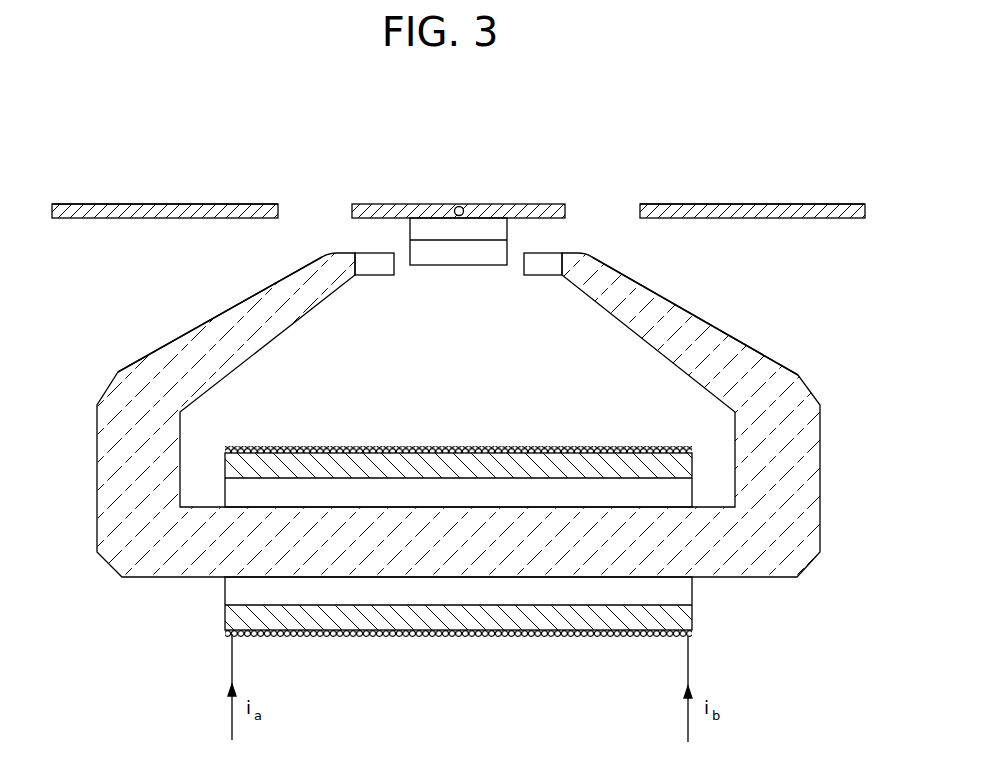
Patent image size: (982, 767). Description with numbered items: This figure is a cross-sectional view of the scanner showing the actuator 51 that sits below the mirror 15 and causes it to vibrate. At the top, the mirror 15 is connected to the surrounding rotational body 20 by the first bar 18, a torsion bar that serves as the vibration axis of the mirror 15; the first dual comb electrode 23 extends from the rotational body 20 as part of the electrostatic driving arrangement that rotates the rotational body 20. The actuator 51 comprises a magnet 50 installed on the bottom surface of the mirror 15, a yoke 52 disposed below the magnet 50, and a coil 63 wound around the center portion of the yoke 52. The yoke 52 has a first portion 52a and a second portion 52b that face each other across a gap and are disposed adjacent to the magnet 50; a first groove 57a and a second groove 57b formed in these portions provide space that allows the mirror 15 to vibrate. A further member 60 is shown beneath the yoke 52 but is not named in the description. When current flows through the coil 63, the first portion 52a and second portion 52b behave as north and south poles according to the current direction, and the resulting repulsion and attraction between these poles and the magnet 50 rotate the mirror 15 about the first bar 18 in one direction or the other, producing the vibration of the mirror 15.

The mirror 15 is at (553, 203).
The first bar 18 is at (458, 206).
The rotational body 20 is at (240, 203).
The first dual comb electrode 23 is at (127, 203).
The magnet 50 is at (508, 240).
The actuator 51 is at (486, 457).
The yoke 52 is at (820, 480).
The first portion 52a is at (598, 262).
The second portion 52b is at (318, 259).
The first groove 57a is at (545, 276).
The second groove 57b is at (378, 276).
The core plate 60 is at (692, 622).
The coil 63 is at (637, 638).